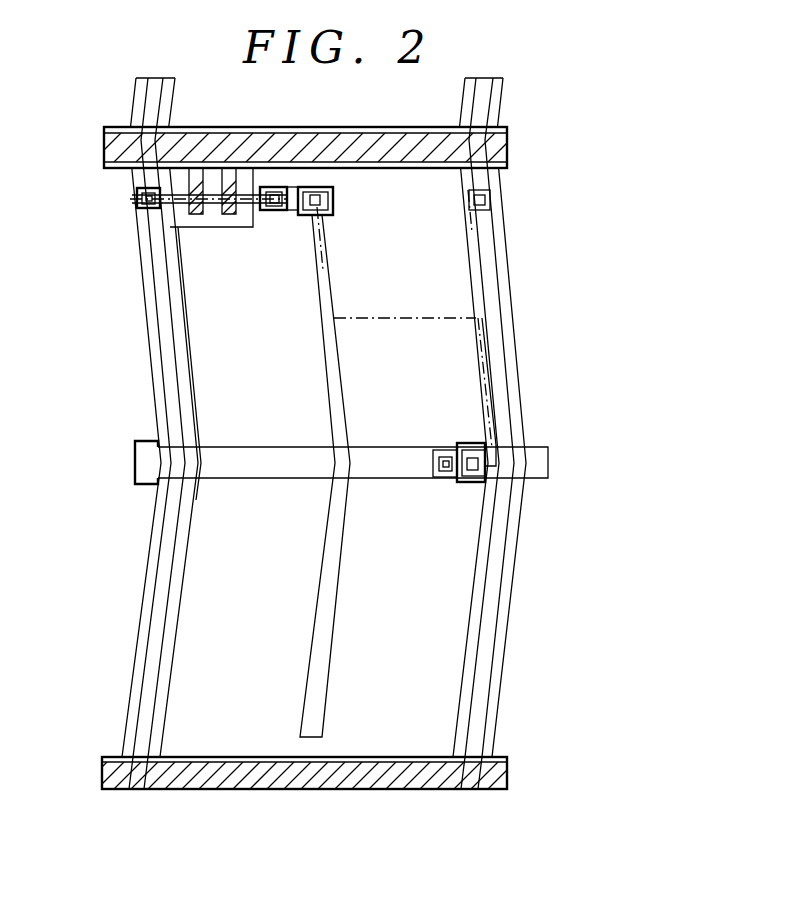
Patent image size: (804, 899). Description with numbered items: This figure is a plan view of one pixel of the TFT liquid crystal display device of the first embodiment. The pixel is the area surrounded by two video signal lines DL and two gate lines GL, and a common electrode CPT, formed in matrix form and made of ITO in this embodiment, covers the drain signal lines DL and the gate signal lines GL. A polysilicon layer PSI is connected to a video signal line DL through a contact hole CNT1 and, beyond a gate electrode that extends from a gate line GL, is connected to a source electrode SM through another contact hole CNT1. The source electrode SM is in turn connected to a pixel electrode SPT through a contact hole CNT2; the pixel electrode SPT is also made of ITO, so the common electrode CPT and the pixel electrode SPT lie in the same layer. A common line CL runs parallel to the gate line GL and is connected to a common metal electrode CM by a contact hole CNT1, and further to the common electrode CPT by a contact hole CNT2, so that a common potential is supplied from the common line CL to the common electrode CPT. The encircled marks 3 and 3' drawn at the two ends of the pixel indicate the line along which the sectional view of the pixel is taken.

The gate line GL is at (507, 149).
The video signal line DL is at (151, 266).
The common electrode CPT is at (147, 322).
The polysilicon layer PSI is at (180, 233).
The source electrode SM is at (294, 212).
The contact hole CNT1 is at (137, 196).
The contact hole CNT2 is at (334, 205).
The pixel electrode SPT is at (336, 340).
The common line CL is at (548, 463).
The common metal electrode CM is at (433, 455).
The section line III 3 is at (113, 203).
The section line III' 3' is at (441, 504).